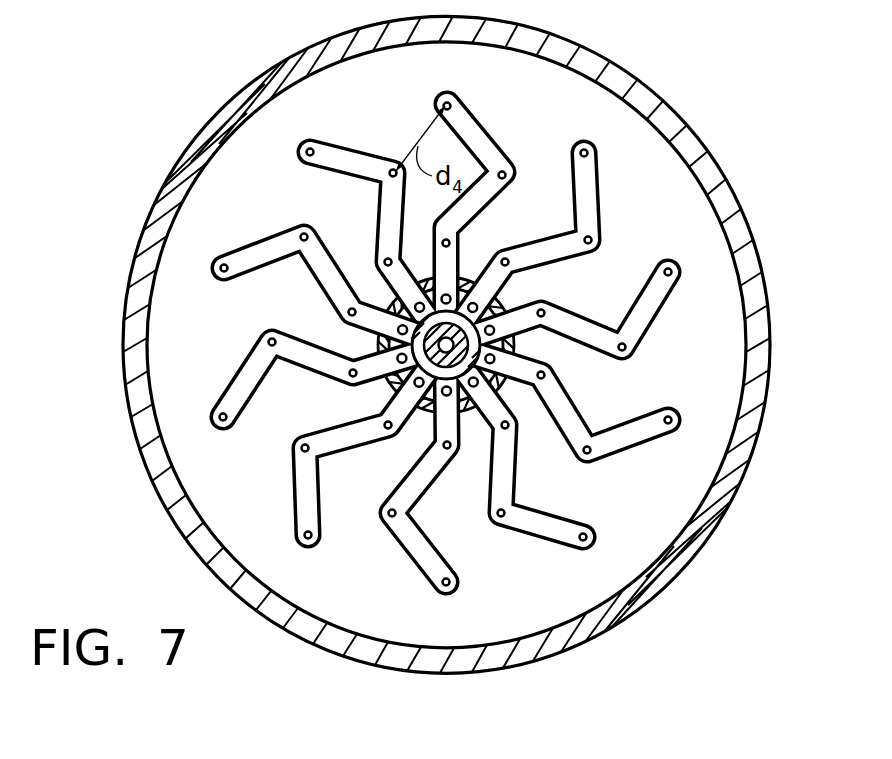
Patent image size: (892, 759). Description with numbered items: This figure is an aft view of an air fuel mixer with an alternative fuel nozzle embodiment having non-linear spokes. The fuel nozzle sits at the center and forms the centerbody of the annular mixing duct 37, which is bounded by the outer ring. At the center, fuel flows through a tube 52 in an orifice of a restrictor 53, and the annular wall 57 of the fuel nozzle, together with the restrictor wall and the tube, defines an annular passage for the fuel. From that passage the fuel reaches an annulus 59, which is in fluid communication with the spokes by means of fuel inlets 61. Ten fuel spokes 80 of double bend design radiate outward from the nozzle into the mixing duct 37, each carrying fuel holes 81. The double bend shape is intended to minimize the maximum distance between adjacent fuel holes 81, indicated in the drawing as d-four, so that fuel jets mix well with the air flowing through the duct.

The annular mixing duct 37 is at (655, 102).
The tube 52 is at (386, 384).
The restrictor 53 is at (378, 344).
The annular wall 57 is at (518, 341).
The annulus 59 is at (497, 393).
The fuel inlets 61 is at (505, 296).
The fuel spokes 80 is at (590, 186).
The fuel holes 81 is at (512, 172).